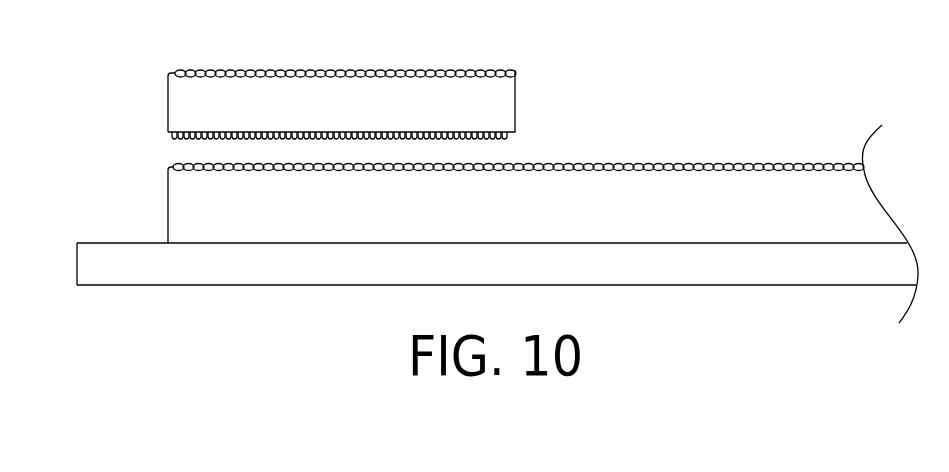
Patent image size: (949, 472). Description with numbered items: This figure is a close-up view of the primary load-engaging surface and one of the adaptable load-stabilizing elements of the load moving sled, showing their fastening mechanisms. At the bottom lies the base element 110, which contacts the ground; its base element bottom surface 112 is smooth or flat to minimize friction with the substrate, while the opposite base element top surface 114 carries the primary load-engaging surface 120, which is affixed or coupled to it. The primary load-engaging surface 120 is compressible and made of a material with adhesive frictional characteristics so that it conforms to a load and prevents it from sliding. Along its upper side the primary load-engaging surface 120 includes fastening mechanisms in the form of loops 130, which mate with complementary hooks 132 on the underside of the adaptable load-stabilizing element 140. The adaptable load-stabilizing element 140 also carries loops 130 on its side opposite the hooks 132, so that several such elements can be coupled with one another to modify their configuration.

The base element 110 is at (461, 224).
The base element bottom surface 112 is at (107, 286).
The base element top surface 114 is at (107, 242).
The primary load-engaging surface 120 is at (650, 189).
The loops 130 is at (188, 70).
The hooks 132 is at (172, 138).
The adaptable load-stabilizing elements 140 is at (340, 105).